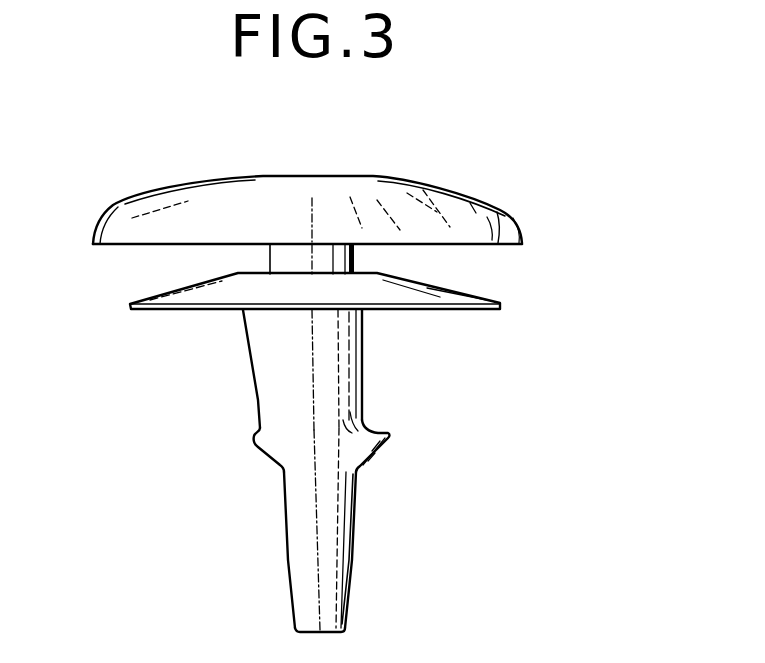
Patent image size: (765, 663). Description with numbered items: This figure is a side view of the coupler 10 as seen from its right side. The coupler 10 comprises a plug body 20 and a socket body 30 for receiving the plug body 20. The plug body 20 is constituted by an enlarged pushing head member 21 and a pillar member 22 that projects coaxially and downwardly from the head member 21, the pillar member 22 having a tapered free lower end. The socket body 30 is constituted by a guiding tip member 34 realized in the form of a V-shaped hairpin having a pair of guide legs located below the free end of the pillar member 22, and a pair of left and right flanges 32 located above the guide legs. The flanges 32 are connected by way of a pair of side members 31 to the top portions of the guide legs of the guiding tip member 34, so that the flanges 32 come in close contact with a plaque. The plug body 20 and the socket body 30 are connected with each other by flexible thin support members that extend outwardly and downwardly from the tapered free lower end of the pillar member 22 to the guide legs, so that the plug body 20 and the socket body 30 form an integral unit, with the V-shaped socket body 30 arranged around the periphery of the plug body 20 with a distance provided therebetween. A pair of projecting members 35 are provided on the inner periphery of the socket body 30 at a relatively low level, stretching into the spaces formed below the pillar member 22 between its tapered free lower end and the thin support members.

The coupler 10 is at (157, 366).
The plug body 20 is at (103, 208).
The pushing head member 21 is at (241, 178).
The pillar member 22 is at (355, 248).
The socket body 30 is at (267, 533).
The side members 31 is at (350, 367).
The flanges 32 is at (470, 310).
The guiding tip member 34 is at (352, 582).
The projecting members 35 is at (255, 437).